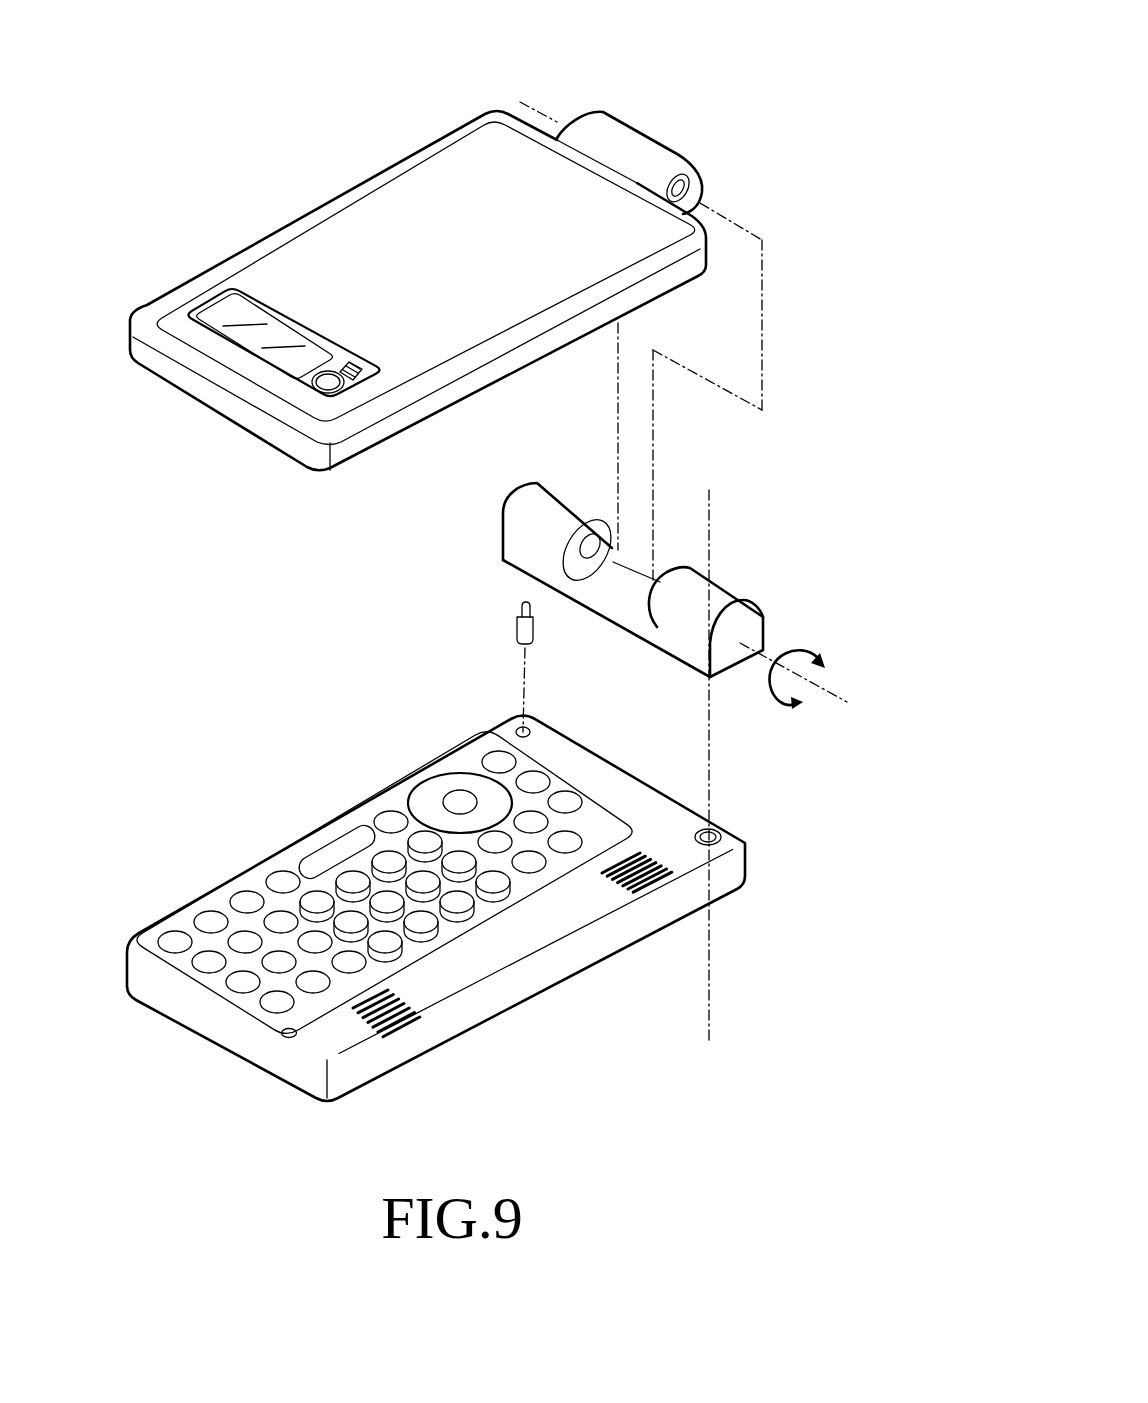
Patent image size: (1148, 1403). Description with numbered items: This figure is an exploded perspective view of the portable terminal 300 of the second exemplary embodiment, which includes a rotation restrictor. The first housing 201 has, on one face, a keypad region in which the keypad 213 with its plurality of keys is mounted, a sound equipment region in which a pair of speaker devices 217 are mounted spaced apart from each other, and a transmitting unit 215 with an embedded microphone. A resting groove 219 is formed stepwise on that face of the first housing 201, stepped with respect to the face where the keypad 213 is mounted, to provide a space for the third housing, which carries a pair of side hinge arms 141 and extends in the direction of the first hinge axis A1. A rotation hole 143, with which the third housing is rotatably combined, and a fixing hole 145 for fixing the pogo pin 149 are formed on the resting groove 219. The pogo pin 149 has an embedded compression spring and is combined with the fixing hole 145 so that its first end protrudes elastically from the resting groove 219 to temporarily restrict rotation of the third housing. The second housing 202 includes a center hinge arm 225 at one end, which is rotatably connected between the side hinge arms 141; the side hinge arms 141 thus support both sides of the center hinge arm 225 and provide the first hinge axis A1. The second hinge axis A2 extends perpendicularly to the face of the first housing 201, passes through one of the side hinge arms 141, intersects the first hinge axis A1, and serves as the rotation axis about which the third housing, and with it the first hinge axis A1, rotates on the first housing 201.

The portable terminal 300 is at (228, 38).
The first housing 201 is at (186, 885).
The second housing 202 is at (305, 203).
The keypad 213 is at (280, 878).
The transmitting unit 215 is at (290, 1037).
The speaker devices 217 is at (632, 896).
The resting groove 219 is at (612, 765).
The center hinge arm 225 is at (637, 143).
The side hinge arms 141 is at (523, 522).
The rotation hole 143 is at (725, 833).
The fixing hole 145 is at (518, 730).
The pogo pin 149 is at (500, 624).
The first hinge axis A1 is at (830, 692).
The second hinge axis A2 is at (712, 998).